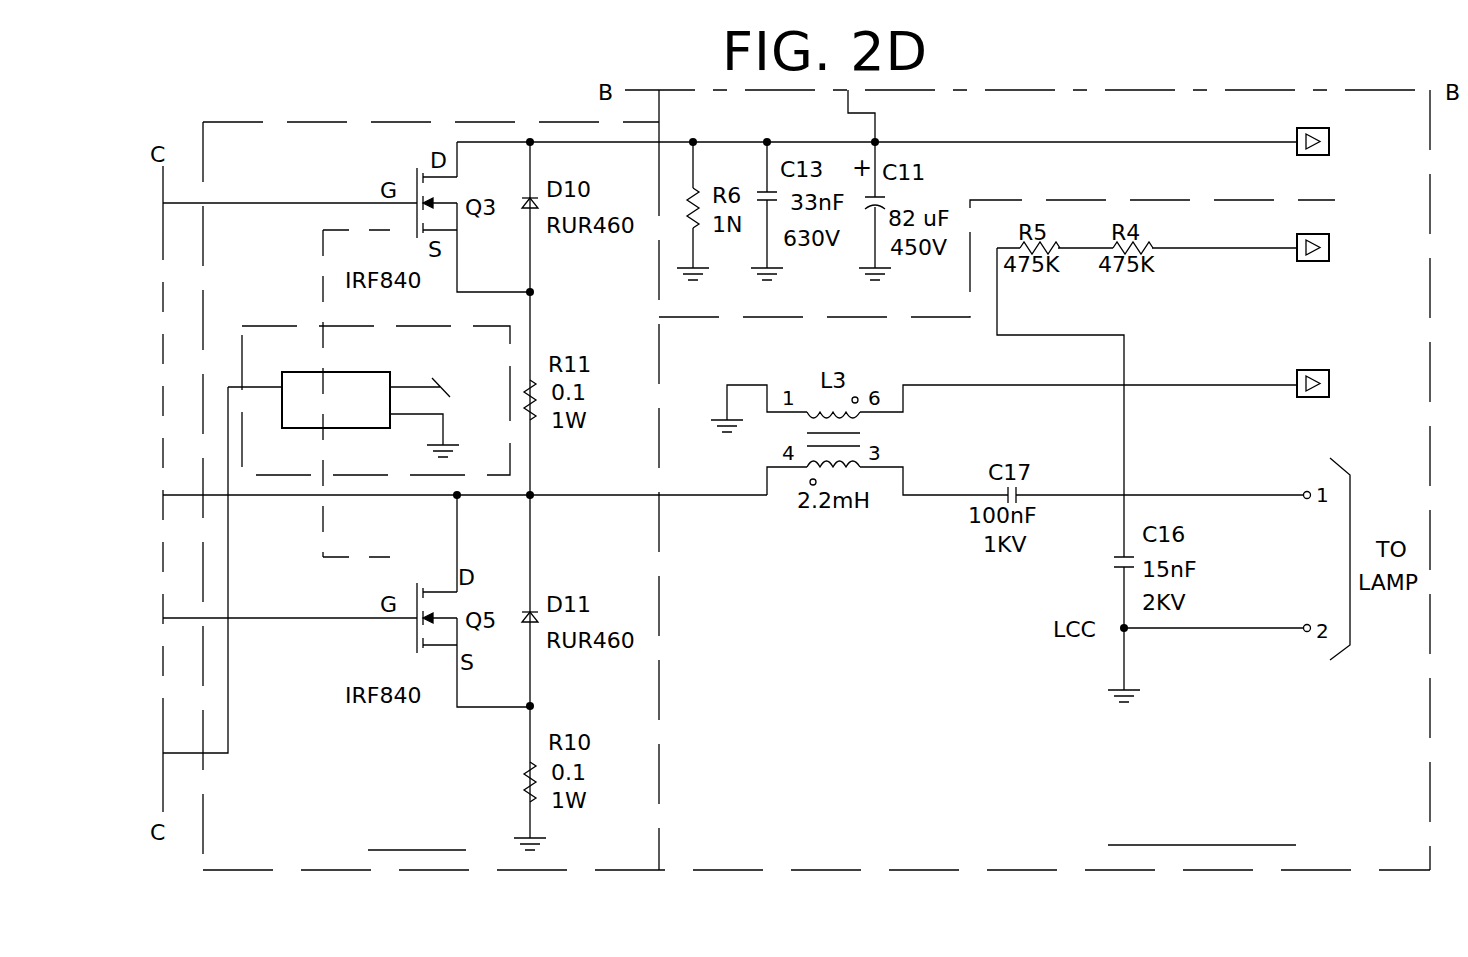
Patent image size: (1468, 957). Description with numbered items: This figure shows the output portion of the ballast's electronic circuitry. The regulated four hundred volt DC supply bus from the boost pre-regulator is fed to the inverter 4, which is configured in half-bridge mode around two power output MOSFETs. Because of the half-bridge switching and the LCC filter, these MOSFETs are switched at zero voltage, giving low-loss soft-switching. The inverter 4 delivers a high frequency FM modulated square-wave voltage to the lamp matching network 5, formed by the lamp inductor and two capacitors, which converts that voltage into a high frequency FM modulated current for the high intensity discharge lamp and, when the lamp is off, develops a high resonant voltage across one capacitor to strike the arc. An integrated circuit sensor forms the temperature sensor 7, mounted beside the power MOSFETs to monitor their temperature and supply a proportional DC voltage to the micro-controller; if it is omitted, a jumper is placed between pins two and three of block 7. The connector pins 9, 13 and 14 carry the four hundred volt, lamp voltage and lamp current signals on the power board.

The inverter 4 is at (420, 873).
The lamp matching network 5 is at (935, 872).
The temperature sensor 7 is at (298, 322).
The connector J1 pin 400V 9 is at (1268, 149).
The connector J1 pin VLAMP 13 is at (1262, 260).
The connector J1 pin ILAMP 14 is at (1308, 392).